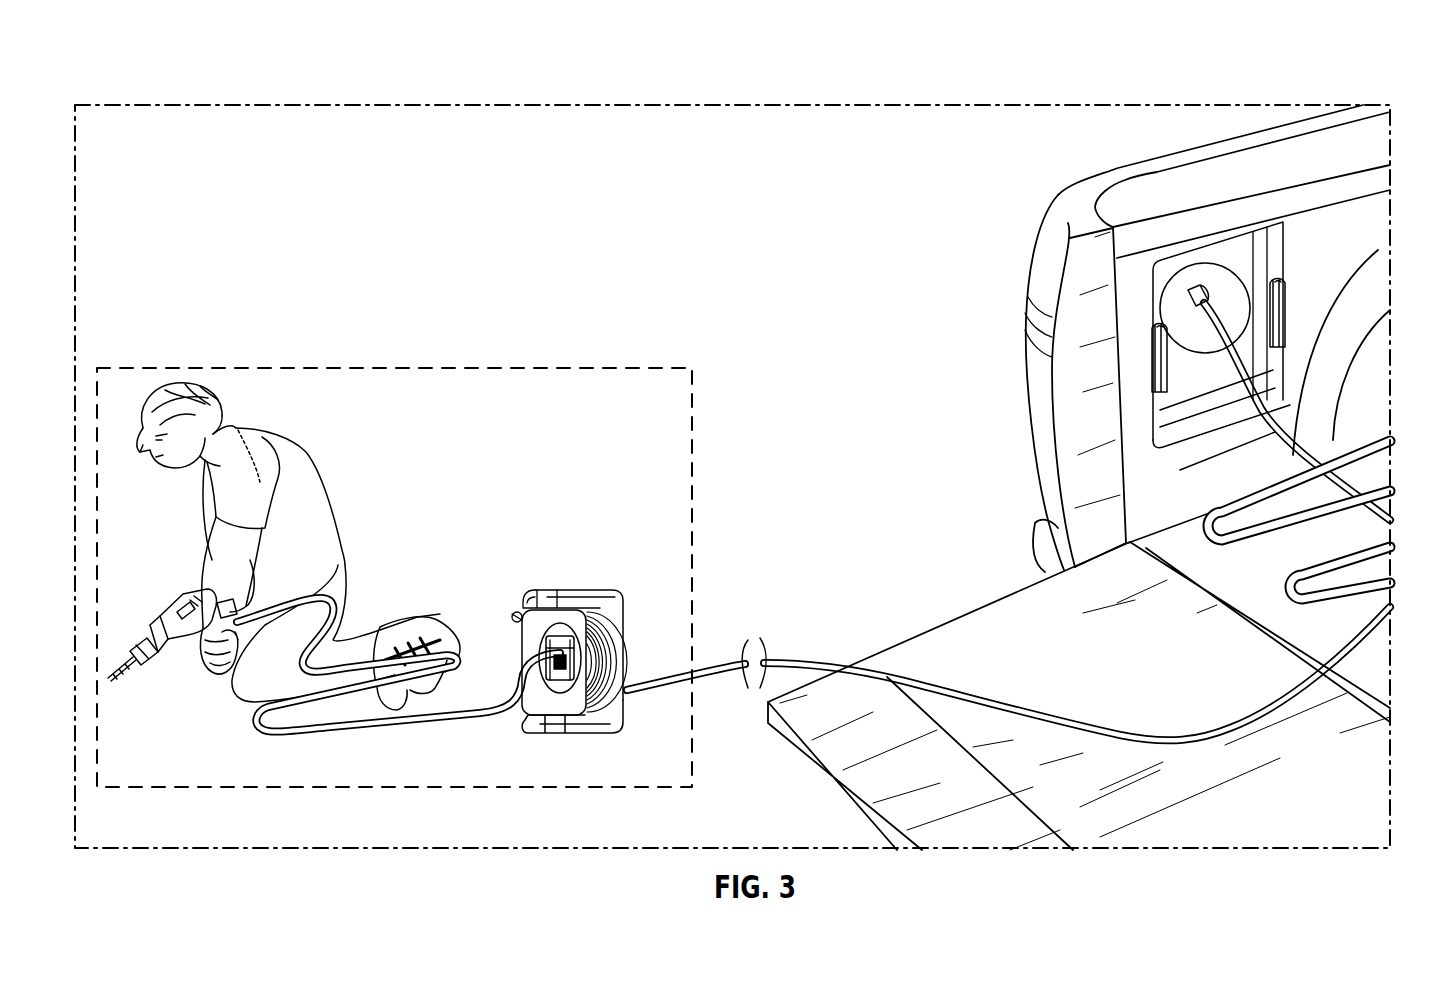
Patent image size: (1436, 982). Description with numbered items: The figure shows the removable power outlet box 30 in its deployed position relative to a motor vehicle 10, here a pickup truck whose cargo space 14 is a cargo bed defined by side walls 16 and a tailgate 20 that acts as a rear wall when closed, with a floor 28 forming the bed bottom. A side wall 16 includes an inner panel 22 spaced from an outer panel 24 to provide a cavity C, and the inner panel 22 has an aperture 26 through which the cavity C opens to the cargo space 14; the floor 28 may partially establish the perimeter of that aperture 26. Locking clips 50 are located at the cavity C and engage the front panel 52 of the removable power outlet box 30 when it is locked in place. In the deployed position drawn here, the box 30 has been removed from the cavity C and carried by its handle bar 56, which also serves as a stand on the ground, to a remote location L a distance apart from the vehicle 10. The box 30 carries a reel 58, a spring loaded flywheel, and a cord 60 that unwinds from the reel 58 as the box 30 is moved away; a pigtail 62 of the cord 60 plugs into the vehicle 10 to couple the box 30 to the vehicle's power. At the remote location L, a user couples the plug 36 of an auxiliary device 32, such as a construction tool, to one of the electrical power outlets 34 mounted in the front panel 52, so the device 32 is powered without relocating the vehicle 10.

The motor vehicle 10 is at (1207, 126).
The cargo space 14 is at (1369, 415).
The side wall 16 is at (1331, 98).
The tailgate 20 is at (830, 737).
The inner panel 22 is at (1370, 133).
The outer panel 24 is at (1093, 172).
The aperture 26 is at (1277, 267).
The floor 28 is at (1240, 584).
The removable power outlet box 30 is at (618, 631).
The auxiliary device 32 is at (173, 600).
The electrical power outlet 34 is at (550, 627).
The plug 36 is at (567, 640).
The locking clip 50 is at (1287, 293).
The front panel 52 is at (572, 660).
The handle bar 56 is at (593, 590).
The reel 58 is at (629, 662).
The cord 60 is at (933, 677).
The pigtail 62 is at (1188, 295).
The cavity C is at (1220, 272).
The remote location L is at (600, 368).